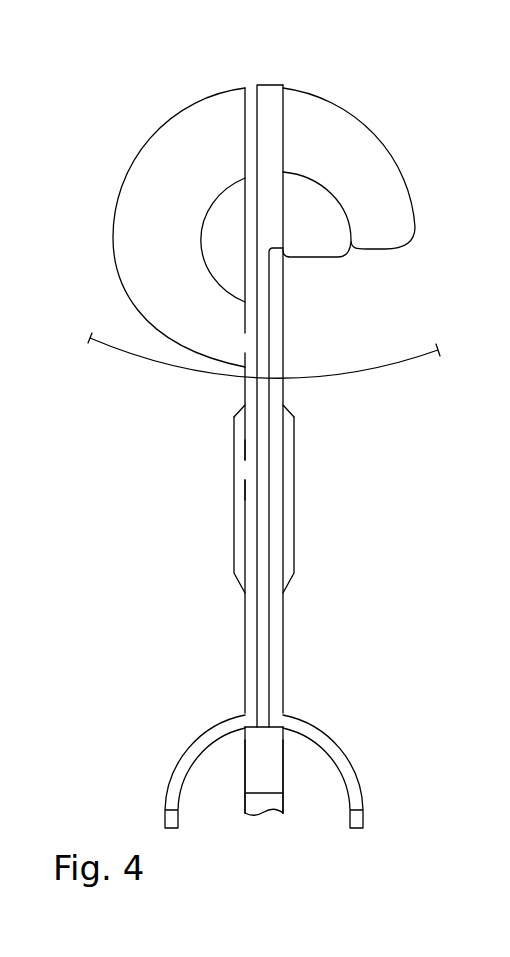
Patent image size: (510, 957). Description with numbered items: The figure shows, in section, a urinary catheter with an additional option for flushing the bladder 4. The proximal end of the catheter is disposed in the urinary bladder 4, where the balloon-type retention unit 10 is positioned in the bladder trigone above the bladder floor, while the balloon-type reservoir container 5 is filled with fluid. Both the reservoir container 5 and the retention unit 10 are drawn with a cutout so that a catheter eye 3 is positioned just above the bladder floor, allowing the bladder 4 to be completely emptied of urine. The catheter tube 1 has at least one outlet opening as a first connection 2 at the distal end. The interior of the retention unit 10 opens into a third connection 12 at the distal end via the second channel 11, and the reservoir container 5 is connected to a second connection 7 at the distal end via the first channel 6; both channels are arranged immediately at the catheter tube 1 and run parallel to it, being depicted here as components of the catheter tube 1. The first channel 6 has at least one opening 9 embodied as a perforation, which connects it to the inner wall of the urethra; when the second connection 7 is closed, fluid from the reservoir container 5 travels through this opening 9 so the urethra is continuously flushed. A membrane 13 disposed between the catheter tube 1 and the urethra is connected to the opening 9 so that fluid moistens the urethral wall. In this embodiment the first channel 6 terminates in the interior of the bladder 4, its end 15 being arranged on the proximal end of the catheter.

The catheter tube 1 is at (268, 763).
The first connection 2 is at (263, 807).
The catheter eye 3 is at (284, 362).
The urinary bladder 4 is at (385, 298).
The reservoir container 5 is at (171, 199).
The first channel 6 is at (250, 419).
The second connection 7 is at (165, 820).
The opening 9 is at (245, 469).
The retention unit 10 is at (325, 246).
The second channel 11 is at (275, 607).
The third connection 12 is at (363, 815).
The membrane 13 is at (288, 507).
The end of the first channel 15 is at (256, 84).